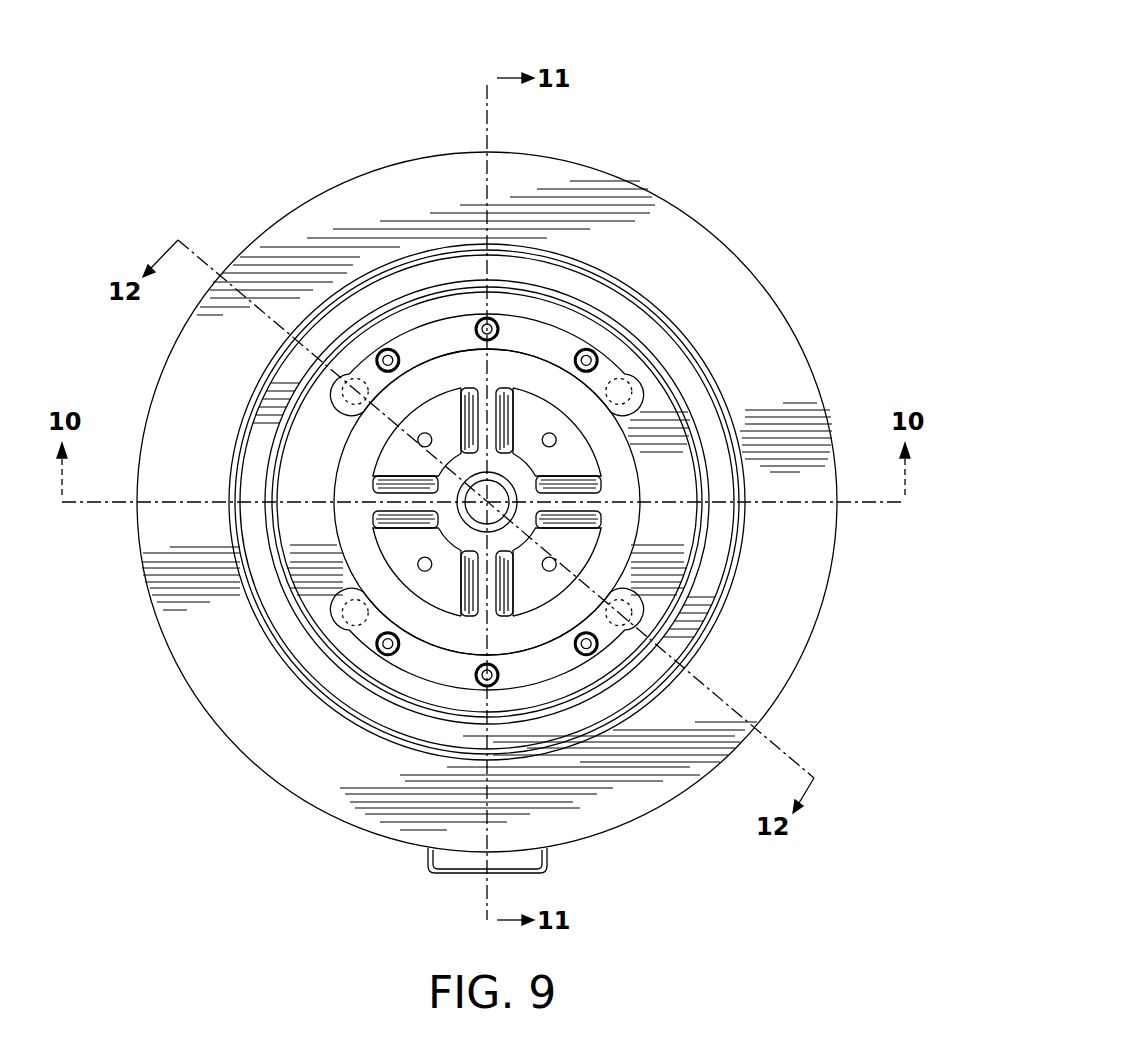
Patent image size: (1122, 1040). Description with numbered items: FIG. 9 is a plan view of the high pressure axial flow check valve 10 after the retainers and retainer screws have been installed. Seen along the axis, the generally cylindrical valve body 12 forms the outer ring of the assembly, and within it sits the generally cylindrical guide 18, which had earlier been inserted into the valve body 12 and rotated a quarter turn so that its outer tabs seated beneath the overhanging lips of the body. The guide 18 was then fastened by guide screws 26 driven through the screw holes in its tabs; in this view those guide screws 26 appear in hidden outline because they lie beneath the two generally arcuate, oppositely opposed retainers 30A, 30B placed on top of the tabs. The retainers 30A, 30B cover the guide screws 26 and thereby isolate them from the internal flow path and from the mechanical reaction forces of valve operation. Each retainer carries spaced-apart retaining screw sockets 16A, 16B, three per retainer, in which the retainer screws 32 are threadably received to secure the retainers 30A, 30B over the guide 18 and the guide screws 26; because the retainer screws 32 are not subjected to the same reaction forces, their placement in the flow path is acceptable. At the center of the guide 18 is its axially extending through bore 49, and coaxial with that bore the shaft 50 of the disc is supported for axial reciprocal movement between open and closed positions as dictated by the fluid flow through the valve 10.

The high pressure axial flow check valve 10 is at (747, 110).
The valve body 12 is at (743, 695).
The retaining screw socket 16A is at (593, 268).
The retaining screw socket 16B is at (594, 688).
The guide 18 is at (527, 524).
The guide screw 26 is at (343, 382).
The retainer 30A is at (538, 340).
The retainer 30B is at (555, 660).
The retainer screw 32 is at (485, 317).
The through bore 49 is at (480, 497).
The shaft 50 is at (503, 497).